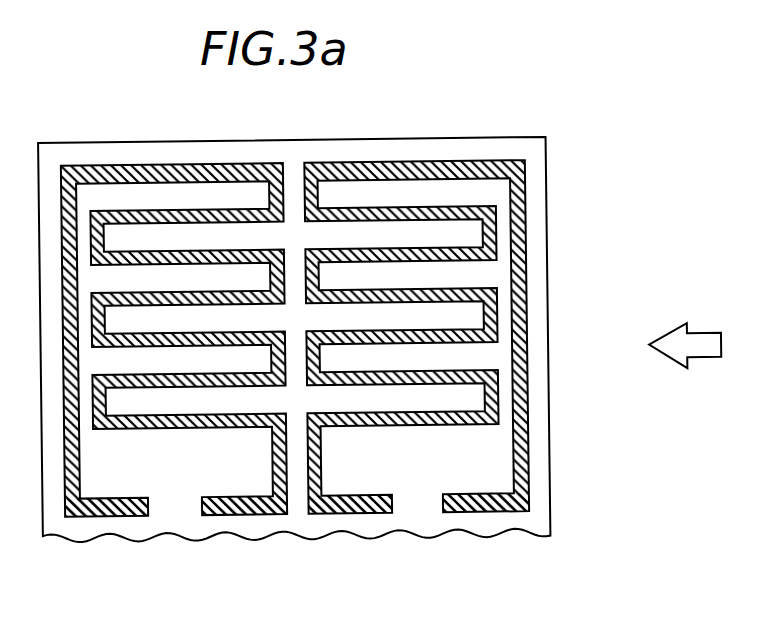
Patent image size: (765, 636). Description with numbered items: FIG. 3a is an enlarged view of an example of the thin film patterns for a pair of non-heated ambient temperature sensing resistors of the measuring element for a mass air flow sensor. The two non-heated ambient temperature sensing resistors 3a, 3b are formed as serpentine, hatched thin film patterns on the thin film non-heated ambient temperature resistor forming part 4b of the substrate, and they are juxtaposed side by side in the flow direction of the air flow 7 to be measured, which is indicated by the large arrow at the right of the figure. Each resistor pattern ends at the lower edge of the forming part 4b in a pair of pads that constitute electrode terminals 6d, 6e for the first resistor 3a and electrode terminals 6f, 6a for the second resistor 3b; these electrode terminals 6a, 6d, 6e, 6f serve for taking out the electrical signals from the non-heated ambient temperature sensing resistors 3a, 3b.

The non-heated ambient temperature sensing resistor 3a is at (104, 163).
The non-heated ambient temperature sensing resistor 3b is at (430, 163).
The thin film non-heated ambient temperature resistor forming part 4b is at (537, 195).
The electrode terminal 6a is at (477, 514).
The electrode terminal 6d is at (111, 514).
The electrode terminal 6e is at (236, 514).
The electrode terminal 6f is at (354, 514).
The air flow 7 is at (700, 337).